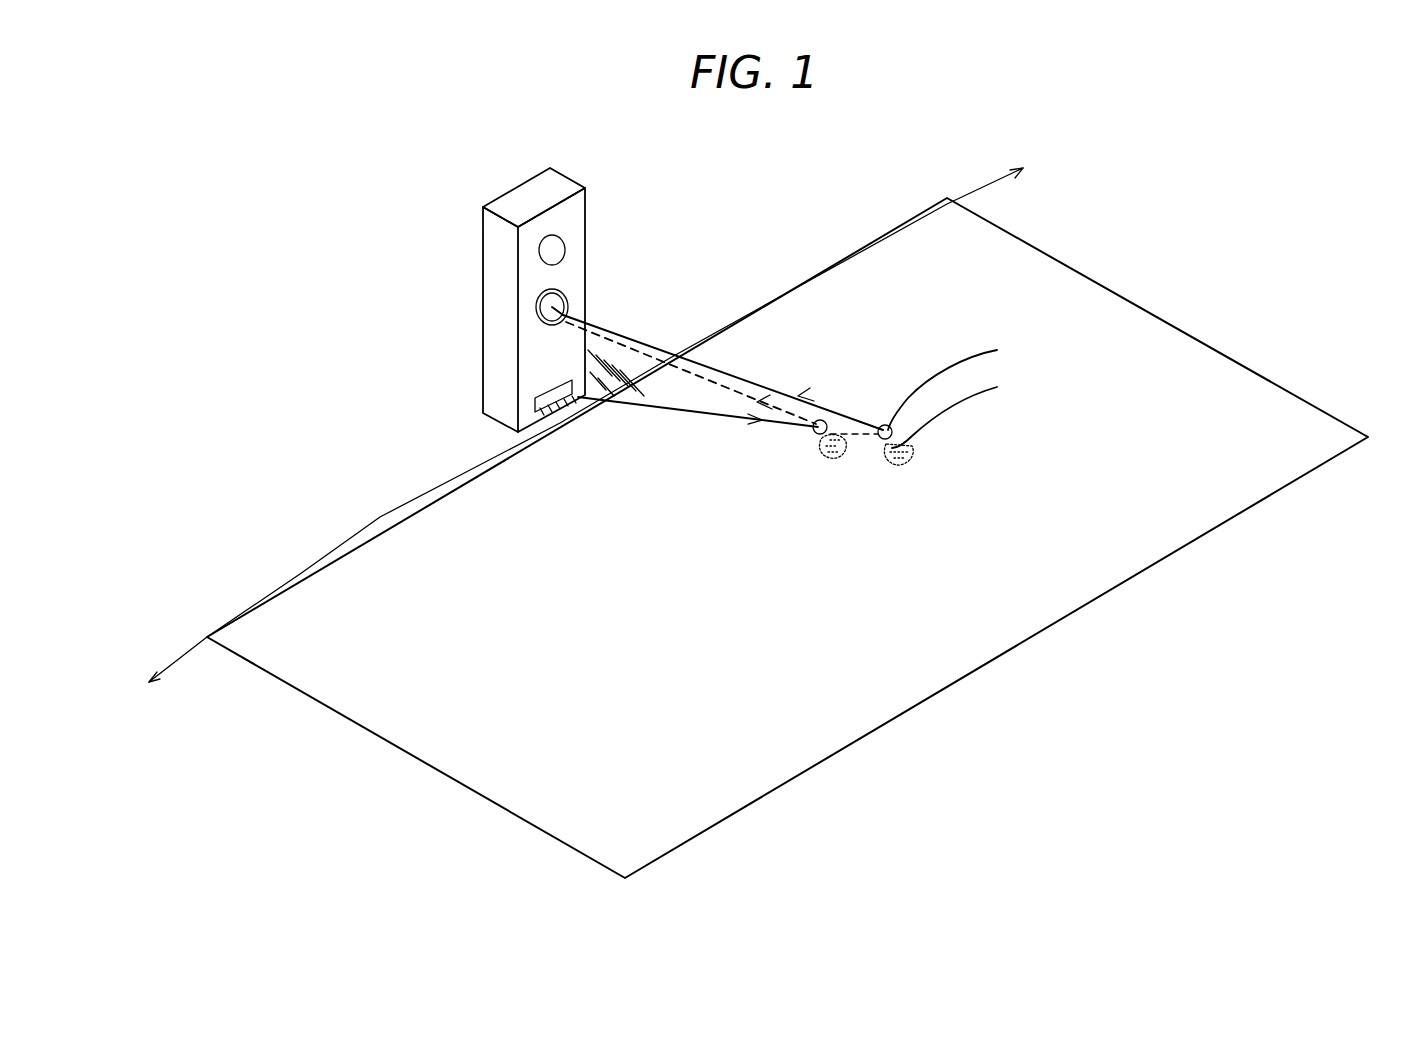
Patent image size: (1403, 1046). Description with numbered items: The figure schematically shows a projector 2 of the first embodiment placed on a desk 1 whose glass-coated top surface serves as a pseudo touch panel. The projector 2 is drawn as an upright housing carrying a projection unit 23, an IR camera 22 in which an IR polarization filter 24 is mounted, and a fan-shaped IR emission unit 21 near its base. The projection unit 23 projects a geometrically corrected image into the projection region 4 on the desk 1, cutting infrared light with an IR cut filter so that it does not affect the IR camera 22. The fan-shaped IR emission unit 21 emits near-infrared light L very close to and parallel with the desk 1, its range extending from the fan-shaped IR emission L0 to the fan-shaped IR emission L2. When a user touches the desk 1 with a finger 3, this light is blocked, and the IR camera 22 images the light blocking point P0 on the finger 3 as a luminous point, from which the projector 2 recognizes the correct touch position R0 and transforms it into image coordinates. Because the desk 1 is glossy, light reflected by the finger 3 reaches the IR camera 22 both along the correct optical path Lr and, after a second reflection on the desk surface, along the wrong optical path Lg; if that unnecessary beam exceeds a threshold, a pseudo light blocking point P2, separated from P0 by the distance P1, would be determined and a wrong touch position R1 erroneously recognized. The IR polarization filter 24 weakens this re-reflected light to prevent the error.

The desk 1 is at (692, 283).
The projector 2 is at (483, 238).
The finger 3 is at (936, 370).
The projection region 4 is at (1163, 325).
The fan-shaped IR emission unit 21 is at (540, 400).
The IR camera 22 is at (570, 303).
The projection unit 23 is at (566, 247).
The IR polarization filter 24 is at (537, 308).
The emitted light sheet L is at (698, 428).
The fan-shaped IR emission L0 is at (586, 425).
The fan-shaped IR emission L2 is at (886, 228).
The correct optical path Lr is at (723, 372).
The wrong optical path Lg is at (691, 373).
The light blocking point P0 is at (882, 424).
The distance between positions P1 is at (857, 448).
The pseudo light blocking point P2 is at (818, 435).
The correct touch position R0 is at (912, 456).
The wrong touch position R1 is at (832, 462).